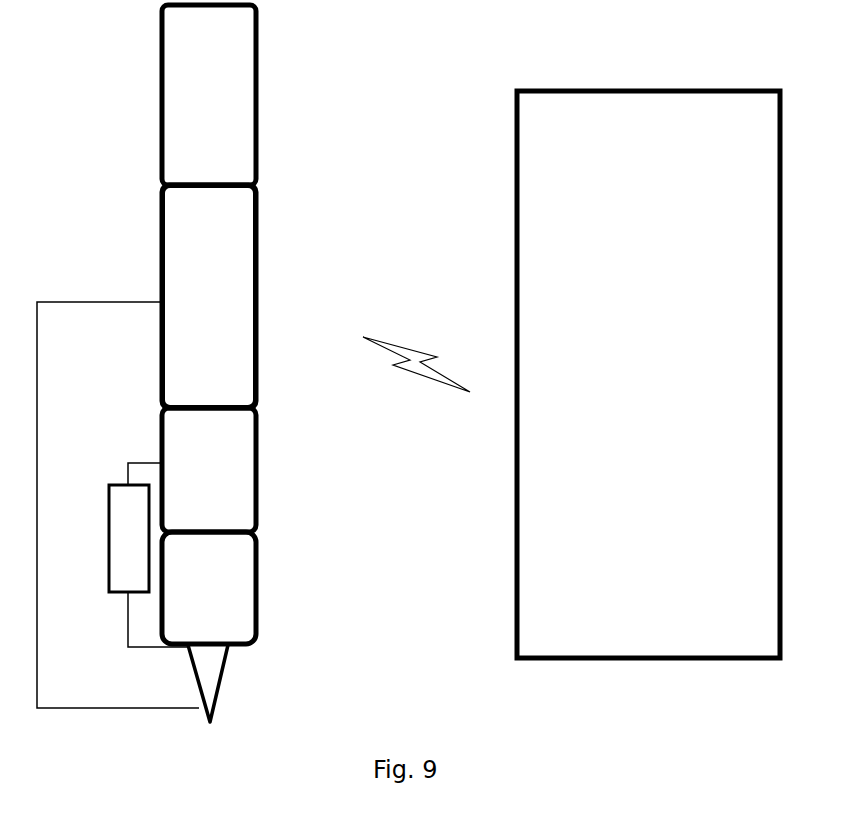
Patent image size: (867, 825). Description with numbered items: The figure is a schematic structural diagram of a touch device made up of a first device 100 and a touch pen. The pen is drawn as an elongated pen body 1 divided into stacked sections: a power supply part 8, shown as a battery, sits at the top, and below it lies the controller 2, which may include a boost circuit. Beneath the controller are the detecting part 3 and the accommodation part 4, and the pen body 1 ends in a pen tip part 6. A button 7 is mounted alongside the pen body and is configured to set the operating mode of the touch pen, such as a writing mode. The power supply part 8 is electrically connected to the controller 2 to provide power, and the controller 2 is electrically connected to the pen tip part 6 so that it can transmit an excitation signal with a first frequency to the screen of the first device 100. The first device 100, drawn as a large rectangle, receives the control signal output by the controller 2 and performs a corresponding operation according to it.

The first device 100 is at (645, 88).
The pen body 1 is at (258, 272).
The controller 2 is at (245, 330).
The detecting part 3 is at (233, 480).
The accommodation part 4 is at (227, 600).
The pen tip part 6 is at (210, 670).
The button 7 is at (104, 520).
The power supply part 8 is at (255, 96).